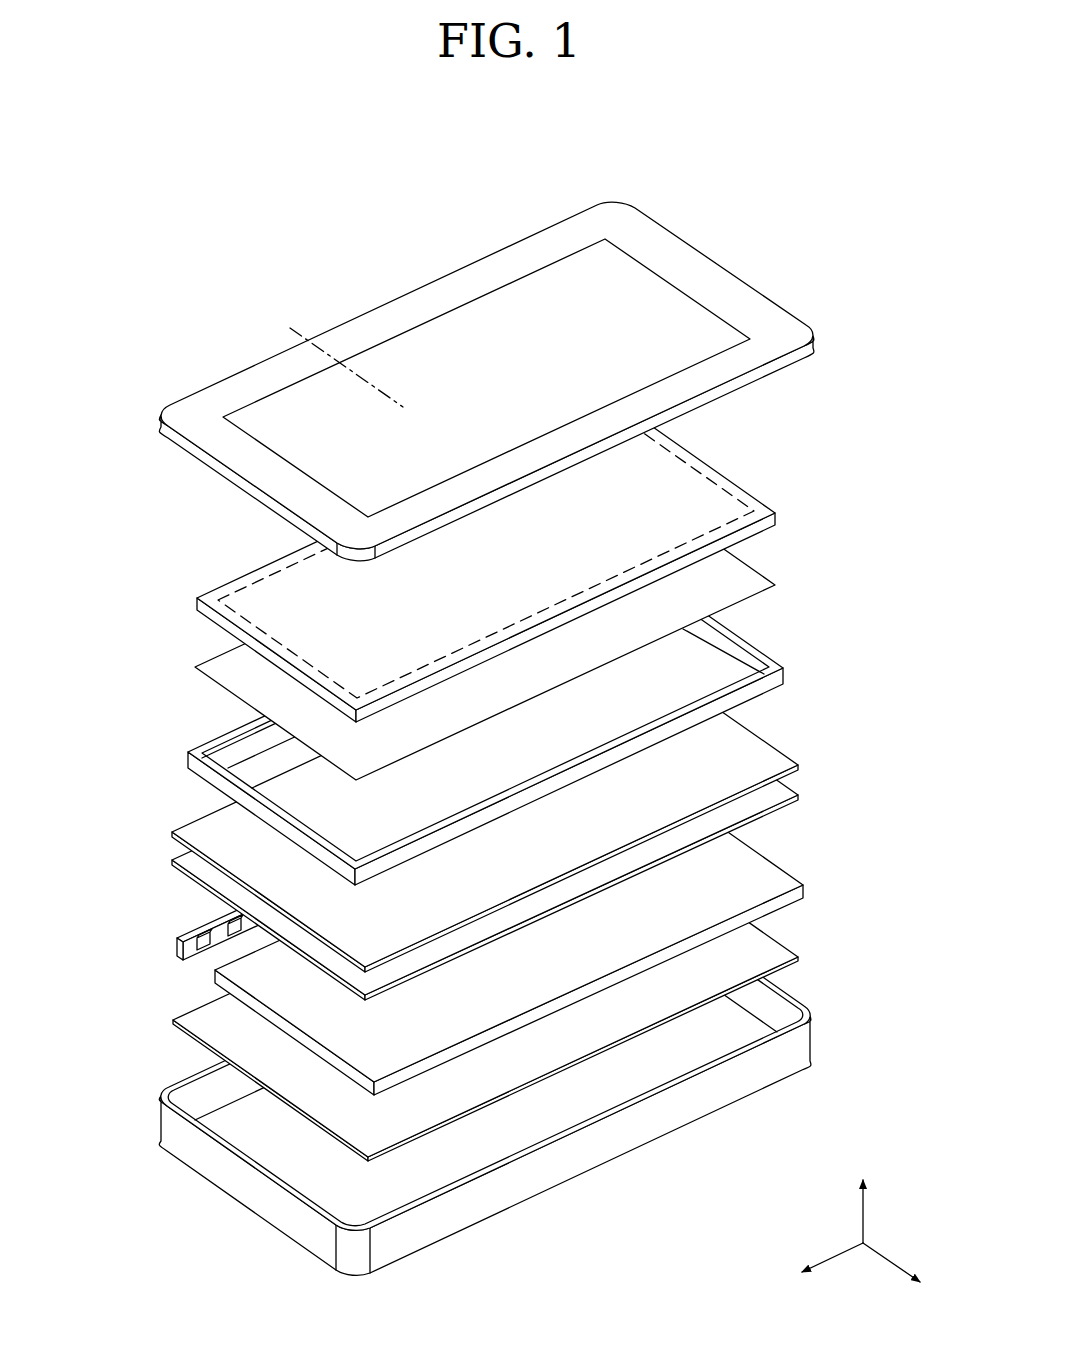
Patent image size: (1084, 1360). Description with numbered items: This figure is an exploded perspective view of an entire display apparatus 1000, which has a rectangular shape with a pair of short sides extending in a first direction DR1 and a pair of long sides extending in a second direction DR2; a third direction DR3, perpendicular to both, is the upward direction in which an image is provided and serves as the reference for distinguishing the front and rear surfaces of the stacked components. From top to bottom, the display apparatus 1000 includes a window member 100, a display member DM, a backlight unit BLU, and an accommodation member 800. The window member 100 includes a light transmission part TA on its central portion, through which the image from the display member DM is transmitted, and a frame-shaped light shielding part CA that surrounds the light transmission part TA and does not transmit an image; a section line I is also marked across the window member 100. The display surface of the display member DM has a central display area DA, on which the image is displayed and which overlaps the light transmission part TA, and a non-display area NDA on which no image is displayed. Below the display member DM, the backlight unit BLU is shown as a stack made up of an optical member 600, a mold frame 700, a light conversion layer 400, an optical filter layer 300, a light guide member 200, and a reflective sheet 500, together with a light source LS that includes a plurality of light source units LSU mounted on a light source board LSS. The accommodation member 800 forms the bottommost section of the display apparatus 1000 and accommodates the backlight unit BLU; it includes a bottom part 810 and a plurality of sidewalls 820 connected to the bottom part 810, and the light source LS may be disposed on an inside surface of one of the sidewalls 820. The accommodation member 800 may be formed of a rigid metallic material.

The display apparatus 1000 is at (506, 716).
The window member 100 is at (543, 381).
The light shielding part CA is at (428, 307).
The light transmission part TA is at (512, 307).
The section line I-I' I is at (286, 328).
The display member DM is at (539, 561).
The display area DA is at (683, 488).
The non-display area NDA is at (731, 491).
The backlight unit BLU is at (496, 816).
The optical member 600 is at (542, 626).
The mold frame 700 is at (776, 681).
The light conversion layer 400 is at (779, 760).
The optical filter layer 300 is at (781, 788).
The light guide member 200 is at (796, 893).
The reflective sheet 500 is at (777, 952).
The light source LS is at (158, 938).
The light source board LSS is at (188, 944).
The light source units LSU is at (200, 950).
The accommodation member 800 is at (555, 1079).
The bottom part 810 is at (739, 1029).
The sidewalls 820 is at (794, 1057).
The first direction DR1 is at (917, 1272).
The second direction DR2 is at (809, 1266).
The third direction DR3 is at (866, 1197).